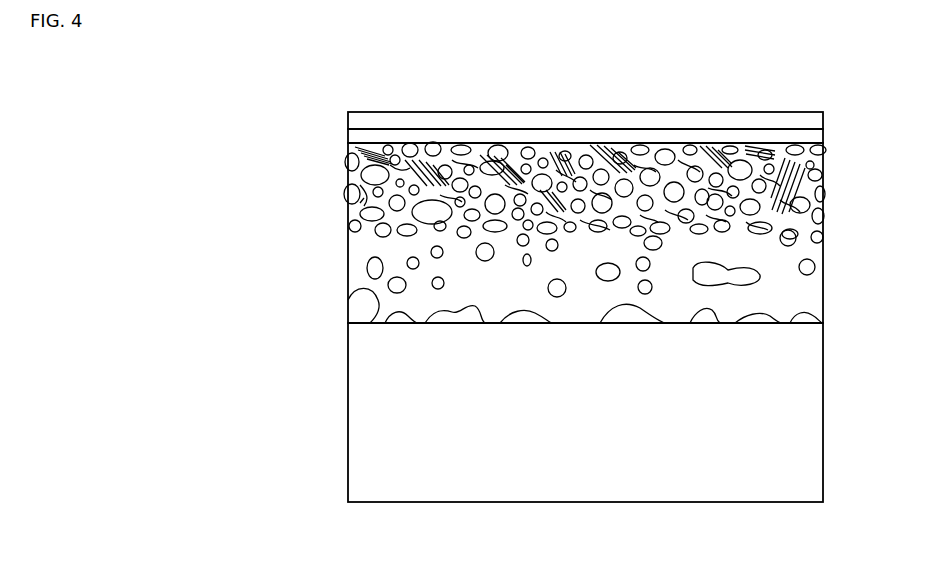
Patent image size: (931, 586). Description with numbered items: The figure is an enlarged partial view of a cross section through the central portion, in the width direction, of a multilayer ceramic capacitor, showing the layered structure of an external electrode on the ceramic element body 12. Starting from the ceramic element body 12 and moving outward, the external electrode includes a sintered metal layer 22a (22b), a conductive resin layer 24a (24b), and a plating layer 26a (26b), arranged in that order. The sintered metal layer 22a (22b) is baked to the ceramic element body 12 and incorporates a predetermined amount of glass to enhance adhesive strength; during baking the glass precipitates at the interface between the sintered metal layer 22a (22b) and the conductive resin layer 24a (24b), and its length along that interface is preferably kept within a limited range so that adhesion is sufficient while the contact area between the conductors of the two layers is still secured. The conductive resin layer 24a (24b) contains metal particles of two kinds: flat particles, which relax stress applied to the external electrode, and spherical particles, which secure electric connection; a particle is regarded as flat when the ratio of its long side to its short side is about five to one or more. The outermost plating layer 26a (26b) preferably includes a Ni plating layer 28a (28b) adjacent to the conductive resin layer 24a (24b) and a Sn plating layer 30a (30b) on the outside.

The ceramic element body 12 is at (346, 325).
The sintered metal layer 22a is at (346, 224).
The sintered metal layer 22b is at (510, 274).
The conductive resin layer 24a is at (346, 148).
The conductive resin layer 24b is at (512, 190).
The plating layer 26a is at (425, 121).
The plating layer 26b is at (425, 121).
The Ni plating layer 28a is at (372, 133).
The Ni plating layer 28b is at (501, 137).
The Sn plating layer 30a is at (368, 120).
The Sn plating layer 30b is at (501, 109).